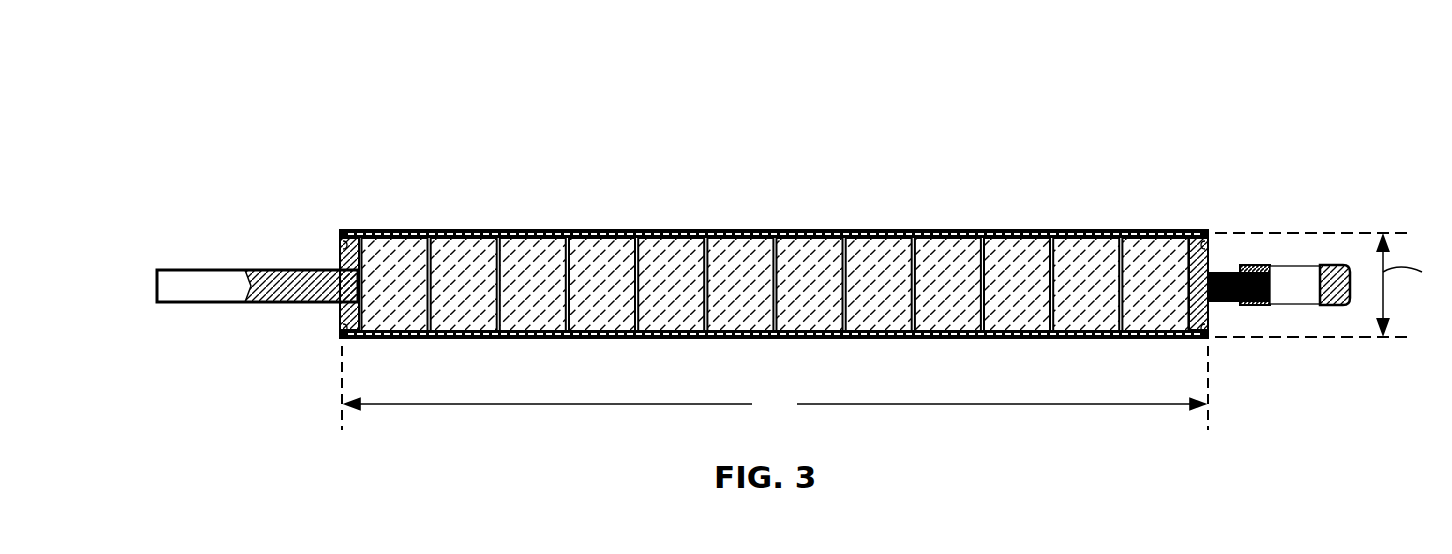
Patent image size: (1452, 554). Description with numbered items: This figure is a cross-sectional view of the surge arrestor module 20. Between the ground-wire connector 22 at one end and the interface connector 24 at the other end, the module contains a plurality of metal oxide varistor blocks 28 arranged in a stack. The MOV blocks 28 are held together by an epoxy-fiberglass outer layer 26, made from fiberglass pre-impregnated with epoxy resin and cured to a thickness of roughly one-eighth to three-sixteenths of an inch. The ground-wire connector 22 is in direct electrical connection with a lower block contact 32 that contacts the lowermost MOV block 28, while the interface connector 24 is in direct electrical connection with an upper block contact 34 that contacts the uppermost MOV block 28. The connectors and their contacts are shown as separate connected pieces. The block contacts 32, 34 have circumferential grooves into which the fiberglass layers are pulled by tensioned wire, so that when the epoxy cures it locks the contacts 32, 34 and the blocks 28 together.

The surge arrestor module 20 is at (397, 88).
The ground-wire connector 22 is at (229, 242).
The interface connector 24 is at (1264, 222).
The epoxy-fiberglass outer layer 26 is at (728, 228).
The metal oxide varistor (MOV) block 28 is at (1147, 278).
The lower block contact 32 is at (340, 248).
The upper block contact 34 is at (1210, 318).